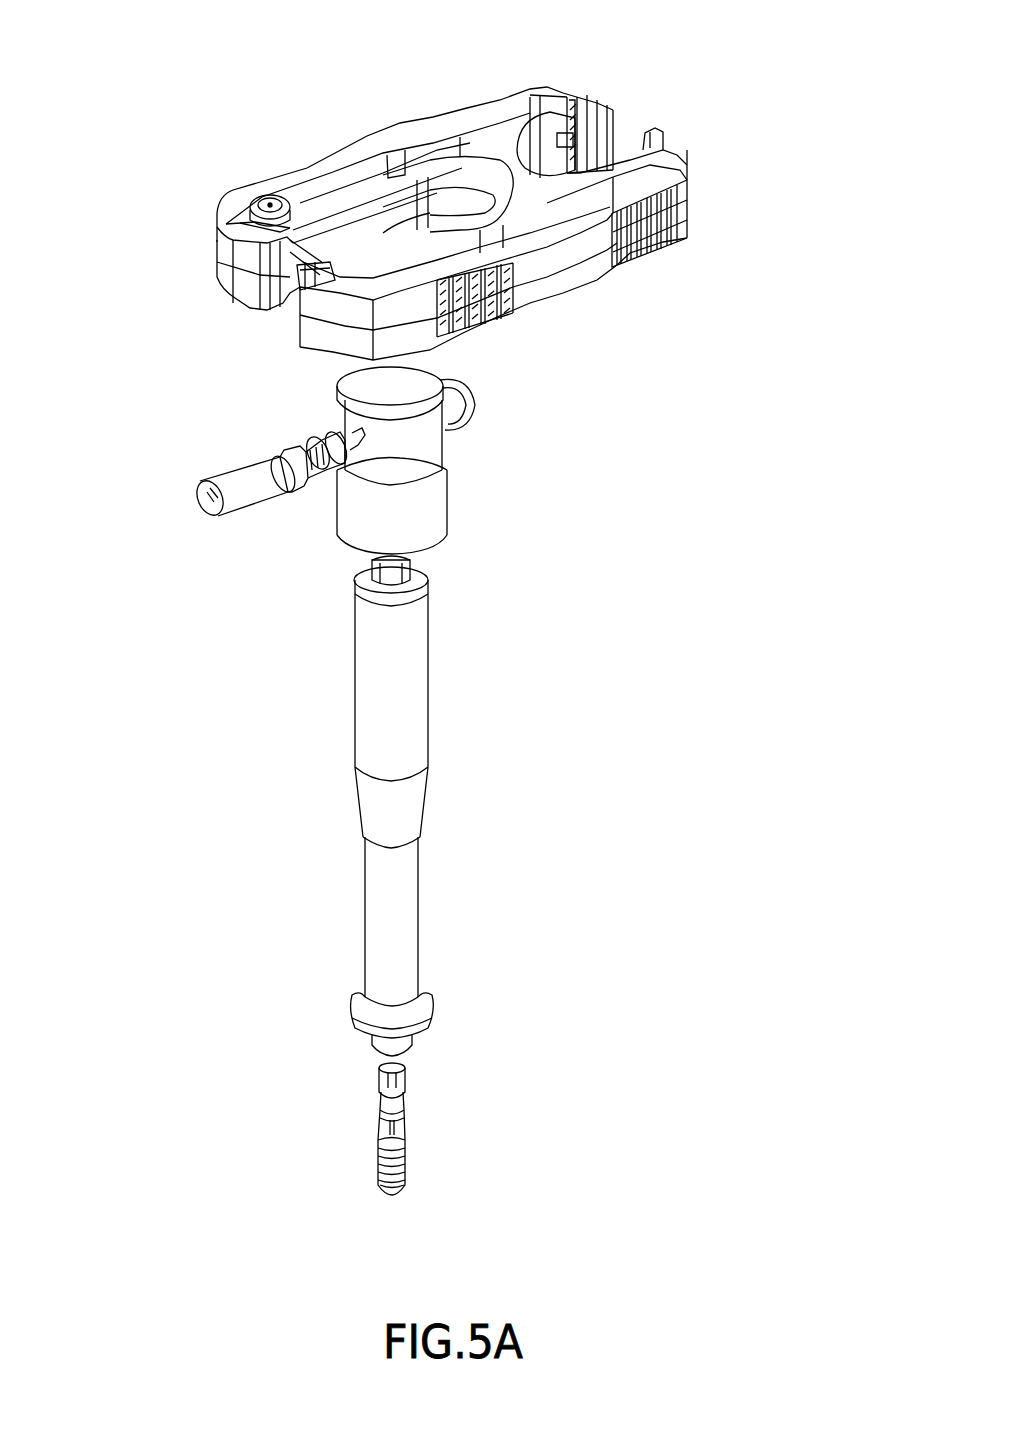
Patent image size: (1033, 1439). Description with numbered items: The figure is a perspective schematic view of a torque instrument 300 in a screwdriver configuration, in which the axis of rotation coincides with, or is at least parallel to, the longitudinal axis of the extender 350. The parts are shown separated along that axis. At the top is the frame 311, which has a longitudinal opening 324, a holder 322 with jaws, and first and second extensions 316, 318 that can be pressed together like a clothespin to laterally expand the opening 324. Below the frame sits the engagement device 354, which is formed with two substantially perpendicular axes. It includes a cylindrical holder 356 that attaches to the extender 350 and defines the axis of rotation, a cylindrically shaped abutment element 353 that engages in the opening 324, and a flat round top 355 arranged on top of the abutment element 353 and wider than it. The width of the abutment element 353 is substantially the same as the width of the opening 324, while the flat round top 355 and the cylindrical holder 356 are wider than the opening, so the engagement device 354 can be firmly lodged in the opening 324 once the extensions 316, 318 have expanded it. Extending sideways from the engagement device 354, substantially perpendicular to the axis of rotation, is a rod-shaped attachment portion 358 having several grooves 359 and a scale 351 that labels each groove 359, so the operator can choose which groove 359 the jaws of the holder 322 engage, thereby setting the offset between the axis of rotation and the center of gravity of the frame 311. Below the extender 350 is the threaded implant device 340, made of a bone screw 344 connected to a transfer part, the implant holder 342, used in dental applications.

The torque instrument 300 is at (197, 120).
The frame 311 is at (543, 77).
The first extension 316 is at (495, 97).
The second extension 318 is at (693, 245).
The holder 322 is at (325, 223).
The longitudinal opening 324 is at (455, 207).
The threaded implant device 340 is at (420, 1152).
The implant holder 342 is at (416, 1083).
The bone screw 344 is at (422, 1180).
The extender 350 is at (435, 813).
The scale 351 is at (317, 427).
The abutment element 353 is at (420, 438).
The engagement device 354 is at (483, 483).
The flat round top 355 is at (413, 383).
The cylindrical holder 356 is at (425, 520).
The rod-shaped attachment portion 358 is at (190, 483).
The grooves 359 is at (285, 452).